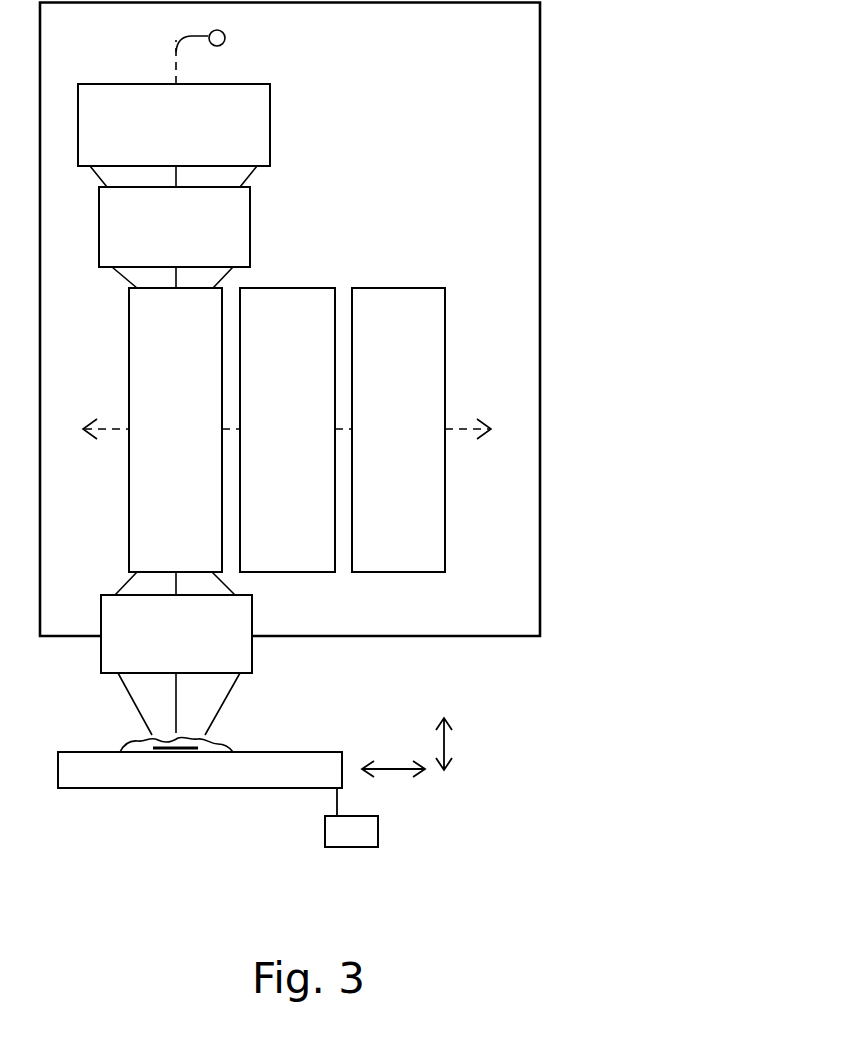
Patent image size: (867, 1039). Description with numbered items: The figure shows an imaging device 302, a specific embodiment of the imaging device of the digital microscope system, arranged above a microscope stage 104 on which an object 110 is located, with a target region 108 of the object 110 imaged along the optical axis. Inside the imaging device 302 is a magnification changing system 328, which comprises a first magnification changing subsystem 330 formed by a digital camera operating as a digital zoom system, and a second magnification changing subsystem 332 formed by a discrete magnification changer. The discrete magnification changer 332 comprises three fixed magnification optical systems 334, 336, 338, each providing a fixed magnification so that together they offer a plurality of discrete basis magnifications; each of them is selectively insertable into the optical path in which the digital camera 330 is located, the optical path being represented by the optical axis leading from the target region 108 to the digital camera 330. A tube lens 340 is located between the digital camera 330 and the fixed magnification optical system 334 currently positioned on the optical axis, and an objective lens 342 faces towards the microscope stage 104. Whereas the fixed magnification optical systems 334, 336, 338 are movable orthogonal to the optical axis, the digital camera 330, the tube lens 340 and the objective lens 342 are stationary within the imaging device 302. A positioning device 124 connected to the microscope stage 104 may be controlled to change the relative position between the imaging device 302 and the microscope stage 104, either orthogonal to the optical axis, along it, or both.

The imaging device 302 is at (541, 250).
The magnification changing system 328 is at (398, 162).
The second magnification changing subsystem 332 is at (462, 313).
The first magnification changing subsystem 330 is at (270, 147).
The tube lens 340 is at (251, 234).
The fixed magnification optical system 334 is at (129, 537).
The fixed magnification optical system 336 is at (308, 573).
The fixed magnification optical system 338 is at (432, 573).
The objective lens 342 is at (253, 658).
The target region 108 is at (140, 732).
The object 110 is at (235, 745).
The microscope stage 104 is at (128, 789).
The positioning device 124 is at (378, 841).